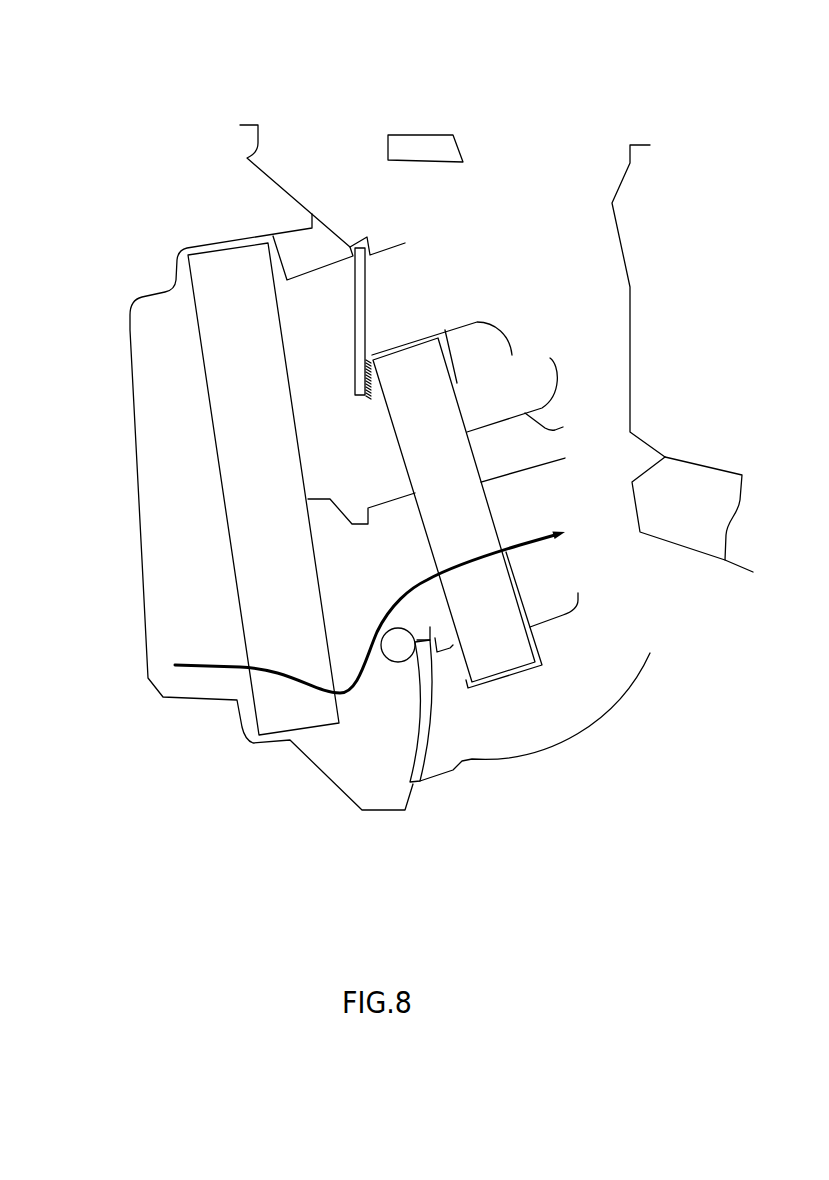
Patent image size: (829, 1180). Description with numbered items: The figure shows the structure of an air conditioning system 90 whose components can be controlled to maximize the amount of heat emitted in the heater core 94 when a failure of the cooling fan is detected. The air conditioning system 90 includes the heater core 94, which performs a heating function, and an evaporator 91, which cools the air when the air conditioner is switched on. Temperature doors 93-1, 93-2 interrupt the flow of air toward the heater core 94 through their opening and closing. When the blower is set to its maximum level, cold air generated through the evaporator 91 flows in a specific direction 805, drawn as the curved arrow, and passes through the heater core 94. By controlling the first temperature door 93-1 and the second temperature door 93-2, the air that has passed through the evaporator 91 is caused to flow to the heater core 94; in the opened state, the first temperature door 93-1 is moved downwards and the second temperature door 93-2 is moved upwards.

The air conditioning system 90 is at (364, 82).
The evaporator 91 is at (231, 268).
The first temperature door 93-1 is at (427, 748).
The second temperature door 93-2 is at (353, 322).
The heater core 94 is at (505, 655).
The specific direction 805 is at (210, 663).